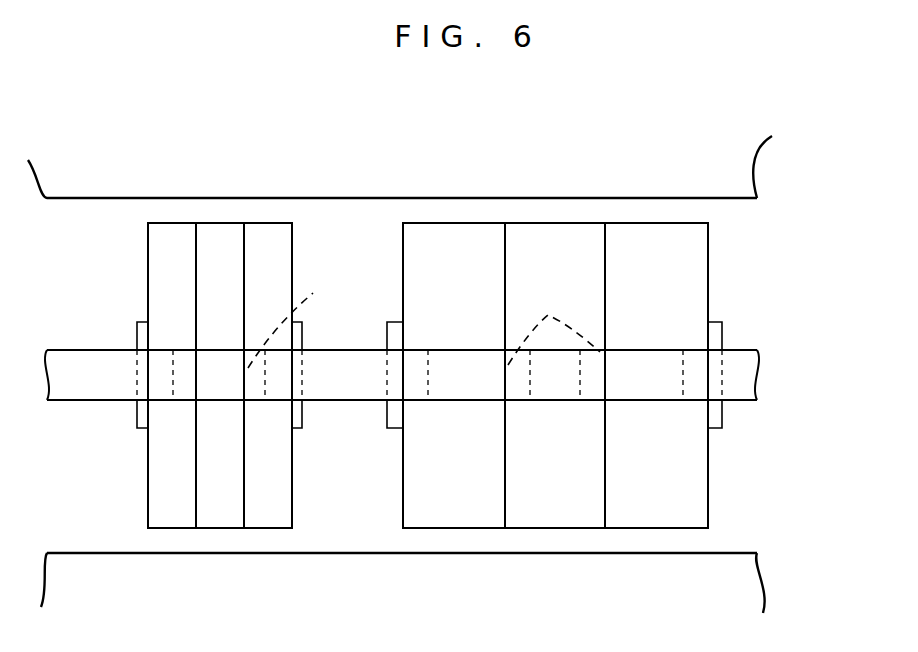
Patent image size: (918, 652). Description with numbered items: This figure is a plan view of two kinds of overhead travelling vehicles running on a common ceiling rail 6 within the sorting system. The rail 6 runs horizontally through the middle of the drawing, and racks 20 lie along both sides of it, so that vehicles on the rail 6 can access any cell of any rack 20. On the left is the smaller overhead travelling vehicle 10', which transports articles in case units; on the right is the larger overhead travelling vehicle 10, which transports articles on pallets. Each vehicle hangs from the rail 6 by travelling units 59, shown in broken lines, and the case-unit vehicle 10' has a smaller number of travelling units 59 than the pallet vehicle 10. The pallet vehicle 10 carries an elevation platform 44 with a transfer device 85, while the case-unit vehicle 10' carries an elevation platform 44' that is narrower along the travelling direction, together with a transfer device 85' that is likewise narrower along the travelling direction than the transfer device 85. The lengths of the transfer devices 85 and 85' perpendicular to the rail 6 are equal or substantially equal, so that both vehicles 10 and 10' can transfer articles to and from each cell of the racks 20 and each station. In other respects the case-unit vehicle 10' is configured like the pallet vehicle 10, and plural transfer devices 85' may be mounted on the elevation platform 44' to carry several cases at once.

The rack 20 is at (730, 157).
The ceiling rail 6 is at (742, 392).
The overhead travelling vehicle 10' is at (259, 373).
The transfer device 85' is at (231, 338).
The overhead travelling vehicle 10 is at (595, 375).
The transfer device 85 is at (585, 375).
The elevation platform 44 is at (572, 392).
The elevation platform 44' is at (212, 402).
The travelling unit 59 is at (424, 322).